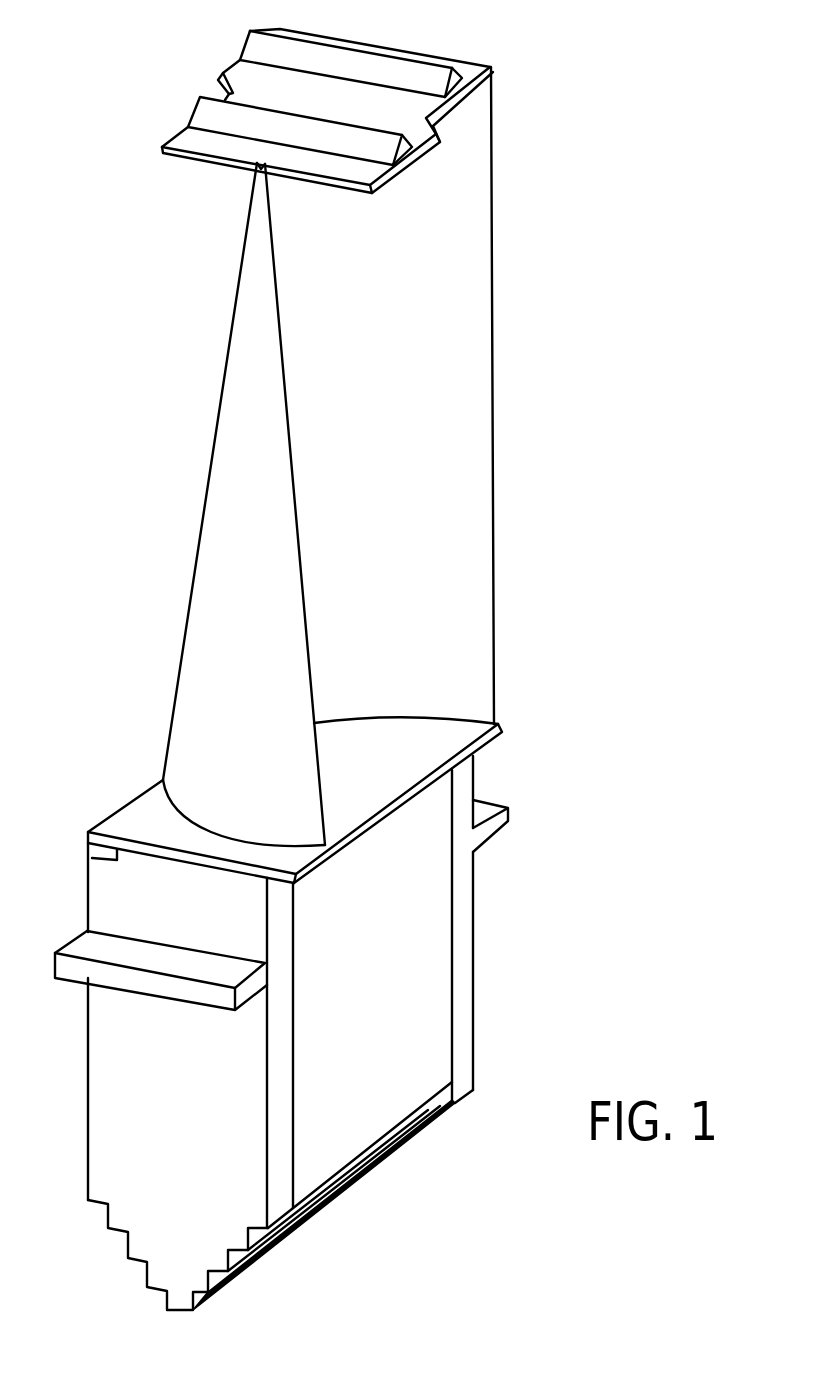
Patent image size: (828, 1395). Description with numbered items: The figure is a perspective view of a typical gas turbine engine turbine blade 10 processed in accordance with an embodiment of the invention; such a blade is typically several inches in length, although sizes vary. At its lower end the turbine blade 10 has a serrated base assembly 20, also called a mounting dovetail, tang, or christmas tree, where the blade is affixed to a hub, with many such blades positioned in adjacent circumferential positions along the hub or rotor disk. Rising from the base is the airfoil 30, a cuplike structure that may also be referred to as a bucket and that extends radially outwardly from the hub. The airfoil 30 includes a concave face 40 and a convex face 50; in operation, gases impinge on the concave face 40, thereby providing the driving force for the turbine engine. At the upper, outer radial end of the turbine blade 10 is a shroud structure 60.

The turbine blade 10 is at (680, 507).
The serrated base assembly 20 is at (345, 1198).
The airfoil 30 is at (493, 277).
The concave face 40 is at (350, 457).
The convex face 50 is at (257, 762).
The shroud structure 60 is at (162, 152).